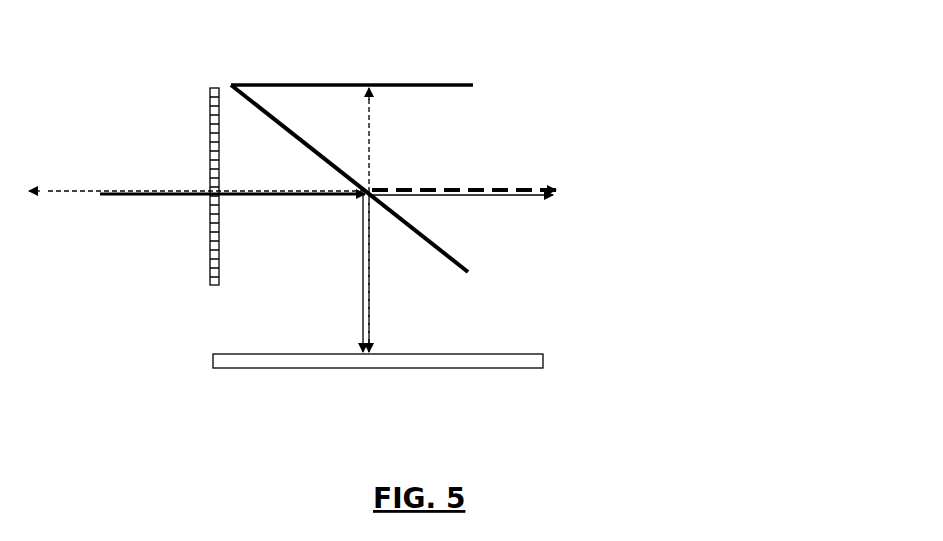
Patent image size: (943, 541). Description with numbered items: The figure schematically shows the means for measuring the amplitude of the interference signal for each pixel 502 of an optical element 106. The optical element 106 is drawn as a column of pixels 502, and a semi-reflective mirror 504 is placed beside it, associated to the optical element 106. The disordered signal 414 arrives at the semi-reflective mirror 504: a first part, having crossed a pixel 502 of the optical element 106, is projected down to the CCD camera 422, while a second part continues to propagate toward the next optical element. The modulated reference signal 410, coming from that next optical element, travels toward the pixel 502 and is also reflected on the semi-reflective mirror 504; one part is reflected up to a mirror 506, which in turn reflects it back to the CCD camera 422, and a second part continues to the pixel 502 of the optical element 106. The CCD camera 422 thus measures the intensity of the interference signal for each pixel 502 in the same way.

The optical element 106 is at (214, 84).
The modulated reference signal 410 is at (367, 115).
The disordered signal 414 is at (118, 197).
The pixel 502 is at (210, 92).
The semi-reflective mirror 504 is at (405, 218).
The mirror 506 is at (398, 85).
The CCD camera 422 is at (530, 369).